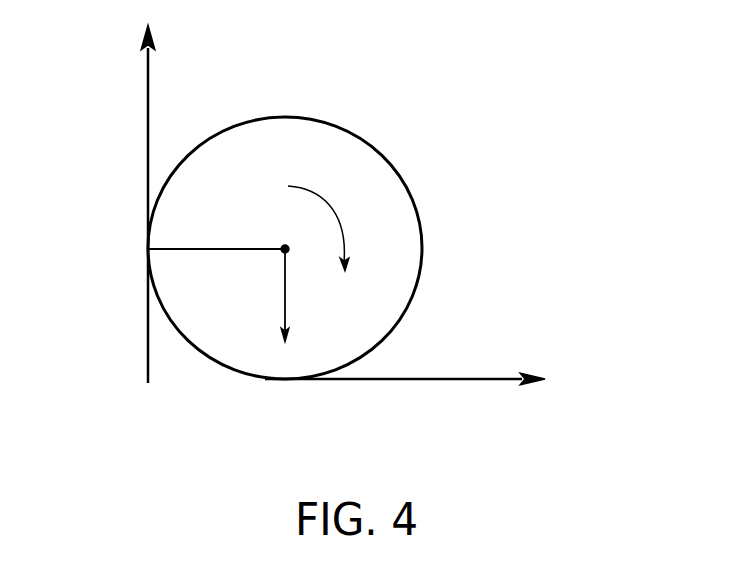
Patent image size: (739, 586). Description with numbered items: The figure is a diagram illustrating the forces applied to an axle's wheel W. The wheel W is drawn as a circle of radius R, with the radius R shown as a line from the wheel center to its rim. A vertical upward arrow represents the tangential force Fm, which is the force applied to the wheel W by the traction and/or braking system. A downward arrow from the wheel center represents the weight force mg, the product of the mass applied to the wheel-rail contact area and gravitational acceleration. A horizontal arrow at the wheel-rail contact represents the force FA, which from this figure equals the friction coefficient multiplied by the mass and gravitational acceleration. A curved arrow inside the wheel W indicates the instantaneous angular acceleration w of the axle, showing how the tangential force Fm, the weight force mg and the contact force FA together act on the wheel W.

The tangential force Fm is at (148, 97).
The adhesion force FA is at (480, 380).
The wheel W is at (340, 150).
The radius of the wheel R is at (212, 247).
The weight force mg is at (311, 295).
The instantaneous angular acceleration w is at (330, 203).